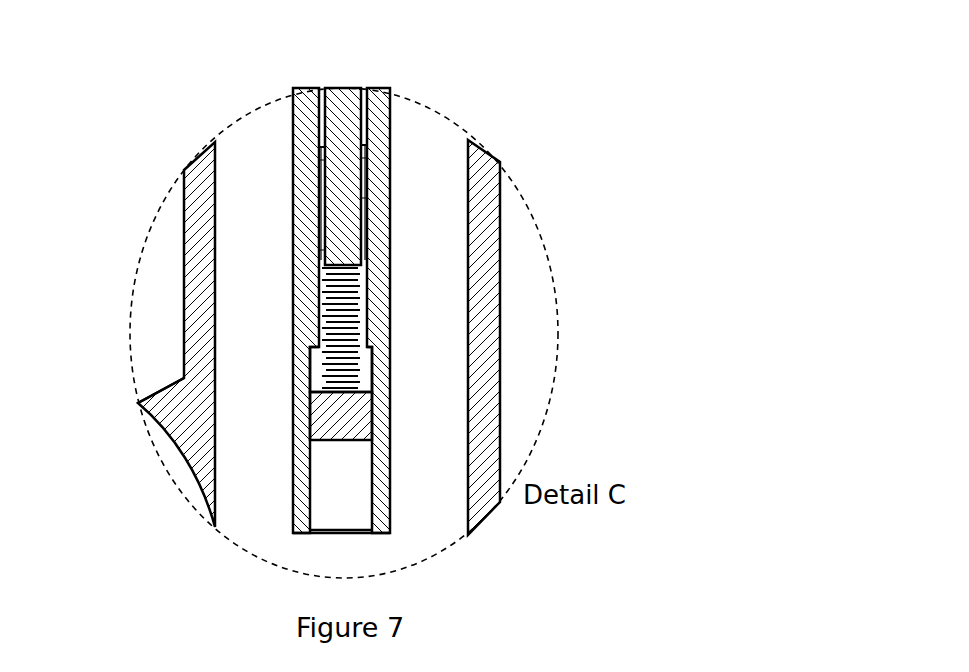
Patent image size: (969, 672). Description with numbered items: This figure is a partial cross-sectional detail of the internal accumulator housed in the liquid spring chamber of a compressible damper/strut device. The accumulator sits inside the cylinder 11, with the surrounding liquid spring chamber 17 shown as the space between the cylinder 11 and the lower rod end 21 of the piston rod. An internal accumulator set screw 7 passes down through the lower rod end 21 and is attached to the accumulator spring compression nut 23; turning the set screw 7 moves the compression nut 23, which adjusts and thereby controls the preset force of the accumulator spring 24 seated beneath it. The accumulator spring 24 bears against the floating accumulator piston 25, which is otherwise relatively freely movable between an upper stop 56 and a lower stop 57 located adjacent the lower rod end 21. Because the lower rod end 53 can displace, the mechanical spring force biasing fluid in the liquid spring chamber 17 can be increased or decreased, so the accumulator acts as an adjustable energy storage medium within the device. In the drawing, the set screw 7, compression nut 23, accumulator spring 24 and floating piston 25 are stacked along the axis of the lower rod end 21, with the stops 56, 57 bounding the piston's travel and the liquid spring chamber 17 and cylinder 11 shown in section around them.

The internal accumulator set screw 7 is at (337, 88).
The cylinder 11 is at (187, 300).
The liquid spring chamber 17 is at (257, 448).
The lower rod end 21 is at (392, 128).
The accumulator spring compression nut 23 is at (365, 193).
The accumulator spring 24 is at (352, 298).
The floating accumulator piston 25 is at (348, 420).
The lower rod end 53 is at (322, 248).
The upper stop 56 is at (372, 345).
The lower stop 57 is at (332, 533).